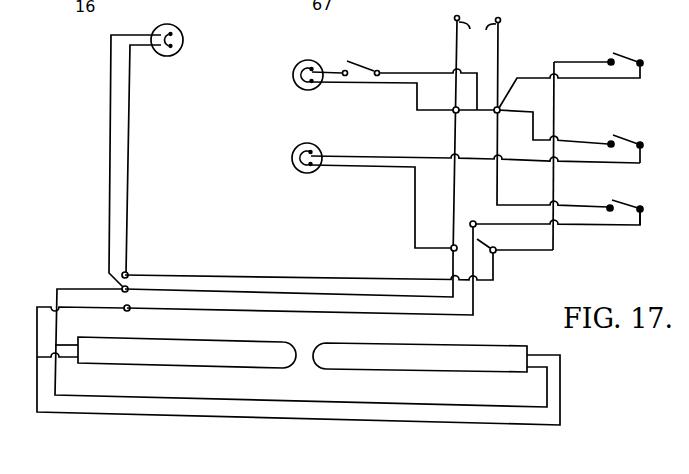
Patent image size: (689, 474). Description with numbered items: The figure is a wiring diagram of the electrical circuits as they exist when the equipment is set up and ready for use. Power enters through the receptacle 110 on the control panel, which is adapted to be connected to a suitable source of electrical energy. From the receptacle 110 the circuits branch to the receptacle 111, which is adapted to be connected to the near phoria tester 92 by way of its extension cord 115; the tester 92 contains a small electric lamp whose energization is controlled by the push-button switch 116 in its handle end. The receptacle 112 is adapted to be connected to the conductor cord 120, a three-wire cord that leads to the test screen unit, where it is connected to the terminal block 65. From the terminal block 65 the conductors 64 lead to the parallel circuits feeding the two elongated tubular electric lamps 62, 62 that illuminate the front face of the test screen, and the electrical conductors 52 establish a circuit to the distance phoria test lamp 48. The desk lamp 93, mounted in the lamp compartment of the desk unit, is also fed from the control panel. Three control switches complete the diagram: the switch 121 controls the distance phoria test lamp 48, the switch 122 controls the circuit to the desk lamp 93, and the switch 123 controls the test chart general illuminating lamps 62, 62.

The electric lamp 48 is at (183, 38).
The electrical conductors 52 is at (132, 155).
The electric lamps 62 is at (327, 343).
The conductors 64 is at (80, 289).
The terminal block 65 is at (130, 306).
The near phoria tester 92 is at (303, 62).
The electric lamp 93 is at (318, 144).
The receptacle 110 is at (530, 137).
The receptacle 111 is at (494, 113).
The receptacle 112 is at (482, 240).
The extension cord 115 is at (392, 82).
The push-button switch 116 is at (363, 62).
The conductor cord 120 is at (303, 310).
The switch 121 is at (634, 47).
The switch 122 is at (634, 129).
The switch 123 is at (626, 200).